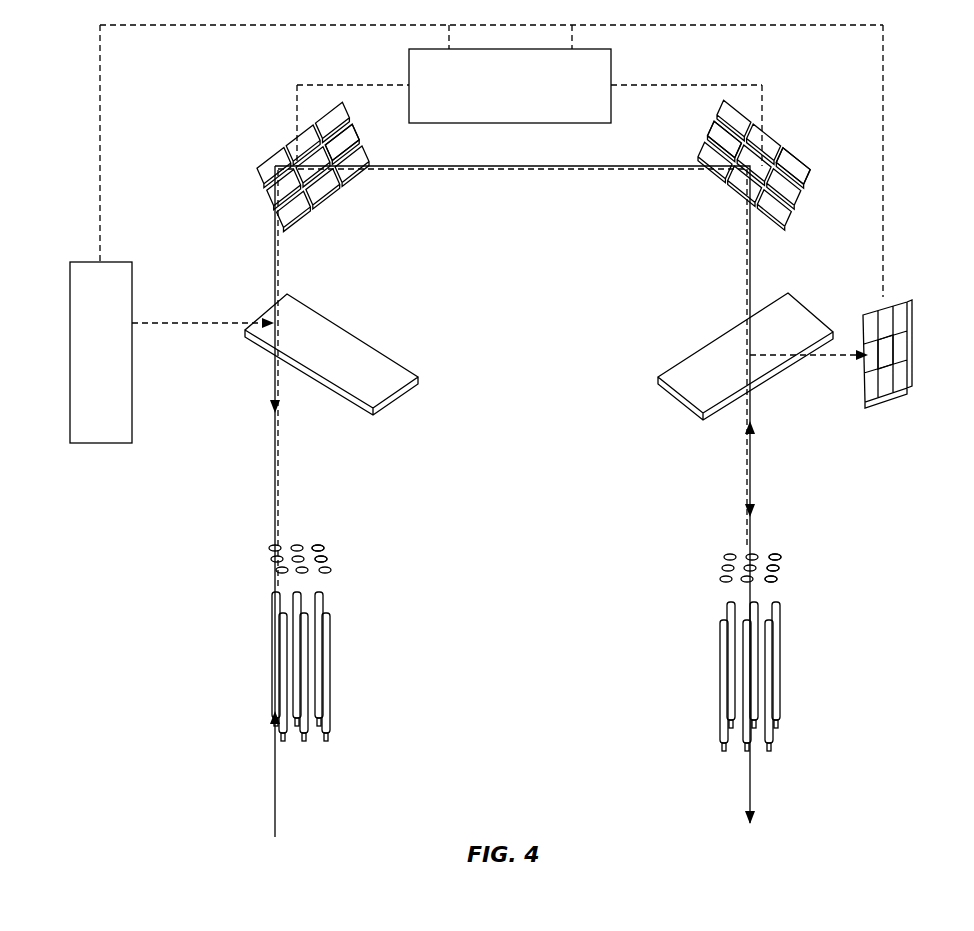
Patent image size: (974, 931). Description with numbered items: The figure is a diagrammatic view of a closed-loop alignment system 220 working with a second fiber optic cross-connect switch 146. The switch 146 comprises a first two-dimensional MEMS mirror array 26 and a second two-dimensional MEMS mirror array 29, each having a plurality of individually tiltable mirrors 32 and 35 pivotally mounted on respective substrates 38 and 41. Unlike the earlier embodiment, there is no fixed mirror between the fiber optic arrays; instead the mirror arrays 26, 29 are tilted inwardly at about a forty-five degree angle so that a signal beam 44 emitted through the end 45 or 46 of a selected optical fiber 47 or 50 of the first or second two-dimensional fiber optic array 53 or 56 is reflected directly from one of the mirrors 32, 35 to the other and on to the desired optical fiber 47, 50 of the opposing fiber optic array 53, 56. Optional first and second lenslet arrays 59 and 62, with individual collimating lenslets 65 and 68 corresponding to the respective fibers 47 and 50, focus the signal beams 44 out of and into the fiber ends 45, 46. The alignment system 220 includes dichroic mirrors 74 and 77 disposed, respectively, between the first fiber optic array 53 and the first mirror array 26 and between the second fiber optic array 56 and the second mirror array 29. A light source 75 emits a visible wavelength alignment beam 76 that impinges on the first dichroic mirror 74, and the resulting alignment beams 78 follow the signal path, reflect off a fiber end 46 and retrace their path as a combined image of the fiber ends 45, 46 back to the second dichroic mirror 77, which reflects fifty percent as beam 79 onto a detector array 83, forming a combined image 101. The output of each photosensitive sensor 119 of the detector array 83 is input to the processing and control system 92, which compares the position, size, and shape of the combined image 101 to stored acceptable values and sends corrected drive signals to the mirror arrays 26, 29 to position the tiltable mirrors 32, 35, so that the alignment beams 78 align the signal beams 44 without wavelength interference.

The first two-dimensional MEMS mirror array 26 is at (311, 164).
The substrate 38 is at (259, 164).
The individually tiltable mirror 32 is at (345, 166).
The processing and control system 92 is at (505, 49).
The second two-dimensional MEMS mirror array 29 is at (744, 151).
The individually tiltable mirror 35 is at (700, 150).
The substrate 41 is at (800, 161).
The second fiber optic cross-connect switch 146 is at (562, 161).
The alignment beam 78 is at (505, 170).
The closed-loop alignment system 220 is at (893, 222).
The light source 75 is at (88, 262).
The alignment beam 76 is at (182, 321).
The dichroic mirror 74 is at (345, 337).
The dichroic mirror 77 is at (671, 401).
The detector array 83 is at (917, 338).
The combined image 101 is at (876, 348).
The photosensitive sensor 119 is at (902, 352).
The beam 79 is at (850, 358).
The signal beam 44 is at (280, 438).
The first lenslet array 59 is at (292, 543).
The collimating lenslet 65 is at (324, 560).
The second lenslet array 62 is at (749, 565).
The collimating lenslet 68 is at (778, 580).
The first two-dimensional fiber optic array 53 is at (288, 656).
The end 45 is at (319, 600).
The optical fiber 47 is at (327, 691).
The second two-dimensional fiber optic array 56 is at (710, 659).
The end 46 is at (776, 600).
The optical fiber 50 is at (723, 692).